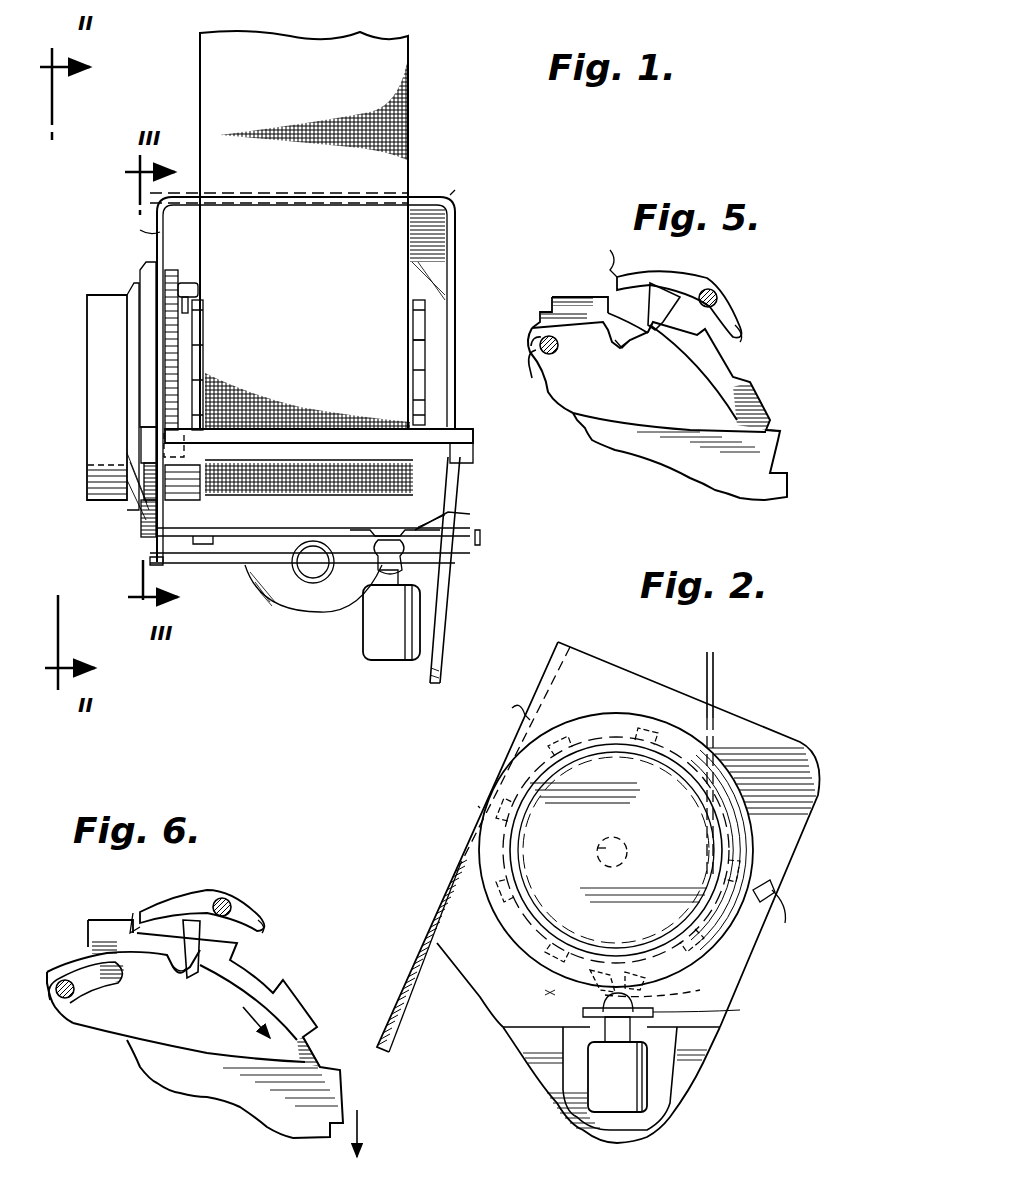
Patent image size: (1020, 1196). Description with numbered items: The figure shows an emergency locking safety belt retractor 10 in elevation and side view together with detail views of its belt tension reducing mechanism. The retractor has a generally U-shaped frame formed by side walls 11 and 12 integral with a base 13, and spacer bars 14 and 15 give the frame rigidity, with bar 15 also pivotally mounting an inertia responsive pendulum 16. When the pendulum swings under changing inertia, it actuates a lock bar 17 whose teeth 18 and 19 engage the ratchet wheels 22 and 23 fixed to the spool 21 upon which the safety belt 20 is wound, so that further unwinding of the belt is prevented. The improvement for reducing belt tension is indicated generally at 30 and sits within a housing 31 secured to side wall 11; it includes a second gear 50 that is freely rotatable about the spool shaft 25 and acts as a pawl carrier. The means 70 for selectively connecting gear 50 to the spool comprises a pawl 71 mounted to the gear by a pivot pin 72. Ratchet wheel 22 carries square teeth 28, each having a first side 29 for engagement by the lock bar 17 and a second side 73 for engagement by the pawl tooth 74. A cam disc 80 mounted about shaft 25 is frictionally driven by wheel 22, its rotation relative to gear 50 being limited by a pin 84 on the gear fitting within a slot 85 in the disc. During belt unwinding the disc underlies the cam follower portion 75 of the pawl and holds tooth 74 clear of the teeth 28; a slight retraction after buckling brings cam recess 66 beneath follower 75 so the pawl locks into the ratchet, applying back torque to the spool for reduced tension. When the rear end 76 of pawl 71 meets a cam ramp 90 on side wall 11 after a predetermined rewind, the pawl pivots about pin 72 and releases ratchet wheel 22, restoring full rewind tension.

In FIG. 1, the emergency locking safety belt retractor 10 is at (462, 185).
In FIG. 2, the emergency locking safety belt retractor 10 is at (475, 805).
In FIG. 1, the side wall 11 is at (152, 236).
In FIG. 1, the side wall 12 is at (456, 215).
In FIG. 2, the side wall 12 is at (585, 672).
In FIG. 1, the base 13 is at (422, 215).
In FIG. 2, the base 13 is at (518, 712).
In FIG. 1, the spacer bar 14 is at (372, 440).
In FIG. 2, the spacer bar 14 is at (785, 923).
In FIG. 1, the spacer bar 15 is at (450, 583).
In FIG. 2, the spacer bar 15 is at (660, 1015).
In FIG. 1, the inertia responsive pendulum 16 is at (375, 632).
In FIG. 2, the inertia responsive pendulum 16 is at (612, 1093).
In FIG. 1, the lock bar 17 is at (448, 512).
In FIG. 2, the lock bar 17 is at (650, 985).
In FIG. 1, the tooth 18 is at (205, 545).
In FIG. 1, the tooth 19 is at (418, 528).
In FIG. 1, the safety belt 20 is at (395, 47).
In FIG. 2, the safety belt 20 is at (705, 655).
In FIG. 1, the spool 21 is at (428, 318).
In FIG. 1, the ratchet wheel 22 is at (204, 331).
In FIG. 5, the ratchet wheel 22 is at (730, 475).
In FIG. 6, the ratchet wheel 22 is at (287, 1112).
In FIG. 2, the ratchet wheel 22 is at (490, 858).
In FIG. 1, the ratchet wheel 23 is at (426, 350).
In FIG. 2, the spool shaft 25 is at (600, 860).
In FIG. 5, the square teeth 28 is at (568, 300).
In FIG. 6, the square teeth 28 is at (108, 925).
In FIG. 5, the first side 29 is at (740, 375).
In FIG. 6, the first side 29 is at (277, 982).
In FIG. 1, the means for reducing belt tension 30 is at (84, 287).
In FIG. 2, the means for reducing belt tension 30 is at (735, 763).
In FIG. 1, the housing 31 is at (105, 385).
In FIG. 2, the housing 31 is at (645, 810).
In FIG. 1, the second gear 50 is at (180, 370).
In FIG. 5, the cam recess 66 is at (621, 348).
In FIG. 6, the cam recess 66 is at (178, 972).
In FIG. 1, the means for selectively connecting gear to spool 70 is at (192, 280).
In FIG. 5, the means for selectively connecting gear to spool 70 is at (702, 272).
In FIG. 6, the means for selectively connecting gear to spool 70 is at (222, 874).
In FIG. 5, the pawl 71 is at (665, 273).
In FIG. 6, the pawl 71 is at (188, 898).
In FIG. 5, the pivot pin 72 is at (718, 295).
In FIG. 6, the pivot pin 72 is at (232, 903).
In FIG. 5, the second side 73 is at (770, 437).
In FIG. 6, the second side 73 is at (317, 1045).
In FIG. 5, the pawl tooth 74 is at (610, 250).
In FIG. 6, the pawl tooth 74 is at (133, 915).
In FIG. 1, the cam follower portion 75 is at (190, 308).
In FIG. 5, the cam follower portion 75 is at (663, 335).
In FIG. 6, the cam follower portion 75 is at (200, 958).
In FIG. 5, the rear end 76 is at (742, 330).
In FIG. 6, the rear end 76 is at (265, 925).
In FIG. 5, the cam disc 80 is at (632, 418).
In FIG. 6, the cam disc 80 is at (183, 1040).
In FIG. 5, the pin 84 is at (558, 352).
In FIG. 6, the pin 84 is at (68, 1000).
In FIG. 5, the slot 85 is at (531, 365).
In FIG. 6, the slot 85 is at (80, 978).
In FIG. 1, the cam ramp 90 is at (170, 500).